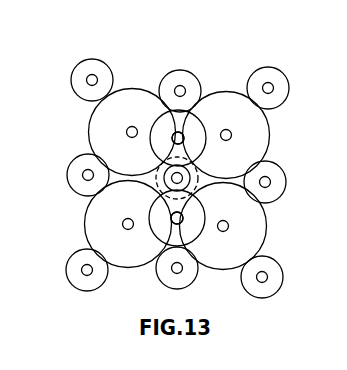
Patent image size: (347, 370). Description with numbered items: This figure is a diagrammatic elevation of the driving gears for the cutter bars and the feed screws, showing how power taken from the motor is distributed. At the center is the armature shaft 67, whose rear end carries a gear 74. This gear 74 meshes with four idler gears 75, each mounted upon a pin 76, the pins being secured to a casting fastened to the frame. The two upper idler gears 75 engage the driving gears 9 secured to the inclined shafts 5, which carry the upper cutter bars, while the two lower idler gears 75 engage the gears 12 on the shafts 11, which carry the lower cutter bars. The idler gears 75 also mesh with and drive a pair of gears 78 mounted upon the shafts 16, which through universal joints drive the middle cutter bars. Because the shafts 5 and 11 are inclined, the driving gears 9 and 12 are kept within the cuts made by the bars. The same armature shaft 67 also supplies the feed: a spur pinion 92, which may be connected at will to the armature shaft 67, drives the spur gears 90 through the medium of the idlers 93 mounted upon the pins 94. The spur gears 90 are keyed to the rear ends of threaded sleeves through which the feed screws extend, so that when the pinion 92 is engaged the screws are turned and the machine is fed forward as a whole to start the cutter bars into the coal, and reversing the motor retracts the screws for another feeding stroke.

The inclined shaft 5 is at (88, 77).
The driving gear 9 is at (107, 65).
The shaft 11 is at (82, 270).
The driving gear 12 is at (88, 290).
The shaft 16 is at (82, 171).
The gear 78 is at (72, 183).
The armature shaft 67 is at (173, 183).
The gear 74 is at (197, 183).
The idler gear 75 is at (90, 125).
The pin 76 is at (127, 128).
The spur gear 90 is at (190, 73).
The spur pinion 92 is at (195, 190).
The idler 93 is at (182, 135).
The pin 94 is at (175, 140).